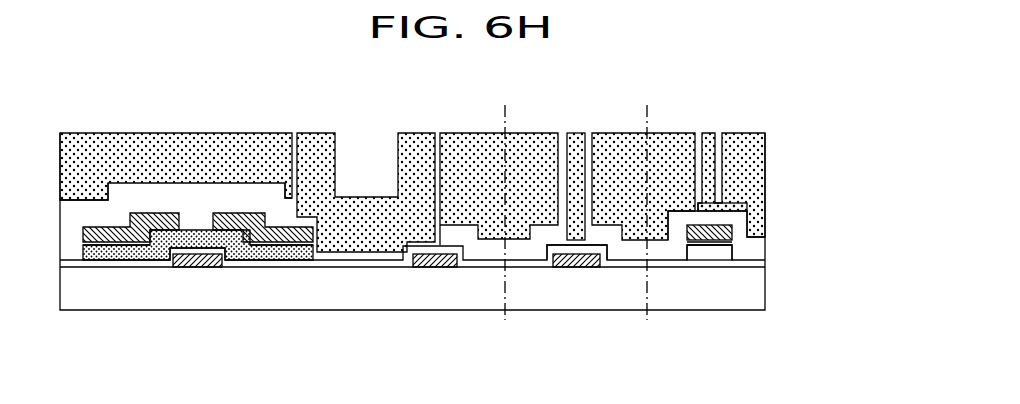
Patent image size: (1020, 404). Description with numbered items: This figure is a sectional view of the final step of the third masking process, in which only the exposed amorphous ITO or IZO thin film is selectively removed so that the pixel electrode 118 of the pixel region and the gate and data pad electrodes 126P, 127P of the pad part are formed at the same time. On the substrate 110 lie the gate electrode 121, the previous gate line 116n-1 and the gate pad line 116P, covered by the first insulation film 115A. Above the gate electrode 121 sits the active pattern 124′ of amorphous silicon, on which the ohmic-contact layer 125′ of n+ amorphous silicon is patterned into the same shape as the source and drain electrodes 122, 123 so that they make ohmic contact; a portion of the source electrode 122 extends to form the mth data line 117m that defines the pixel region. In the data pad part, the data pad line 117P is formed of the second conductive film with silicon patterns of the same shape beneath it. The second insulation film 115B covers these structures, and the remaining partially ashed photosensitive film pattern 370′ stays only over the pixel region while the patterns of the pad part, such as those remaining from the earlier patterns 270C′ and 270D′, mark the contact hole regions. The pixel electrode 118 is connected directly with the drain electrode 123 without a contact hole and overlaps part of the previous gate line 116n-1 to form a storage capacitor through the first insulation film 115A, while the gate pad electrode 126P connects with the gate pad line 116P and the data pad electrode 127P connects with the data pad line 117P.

The substrate 110 is at (763, 292).
The first insulation film 115A is at (762, 262).
The second insulation film 115B is at (72, 254).
The (n−1)th gate line 116n-1 is at (434, 262).
The gate pad line 116P is at (564, 262).
The mth data line 117m is at (100, 232).
The data pad line 117P is at (733, 233).
The pixel electrode 118 is at (345, 262).
The gate electrode 121 is at (195, 262).
The source electrode 122 is at (163, 226).
The drain electrode 123 is at (232, 222).
The active pattern 124′ is at (247, 259).
The ohmic-contact layer 125′ is at (291, 259).
The gate pad electrode 126P is at (587, 262).
The data pad electrode 127P is at (718, 212).
The sixth photosensitive film pattern 270C′ is at (507, 128).
The seventh photosensitive film pattern 270D′ is at (648, 125).
The eighth photosensitive film pattern 370′ is at (317, 135).